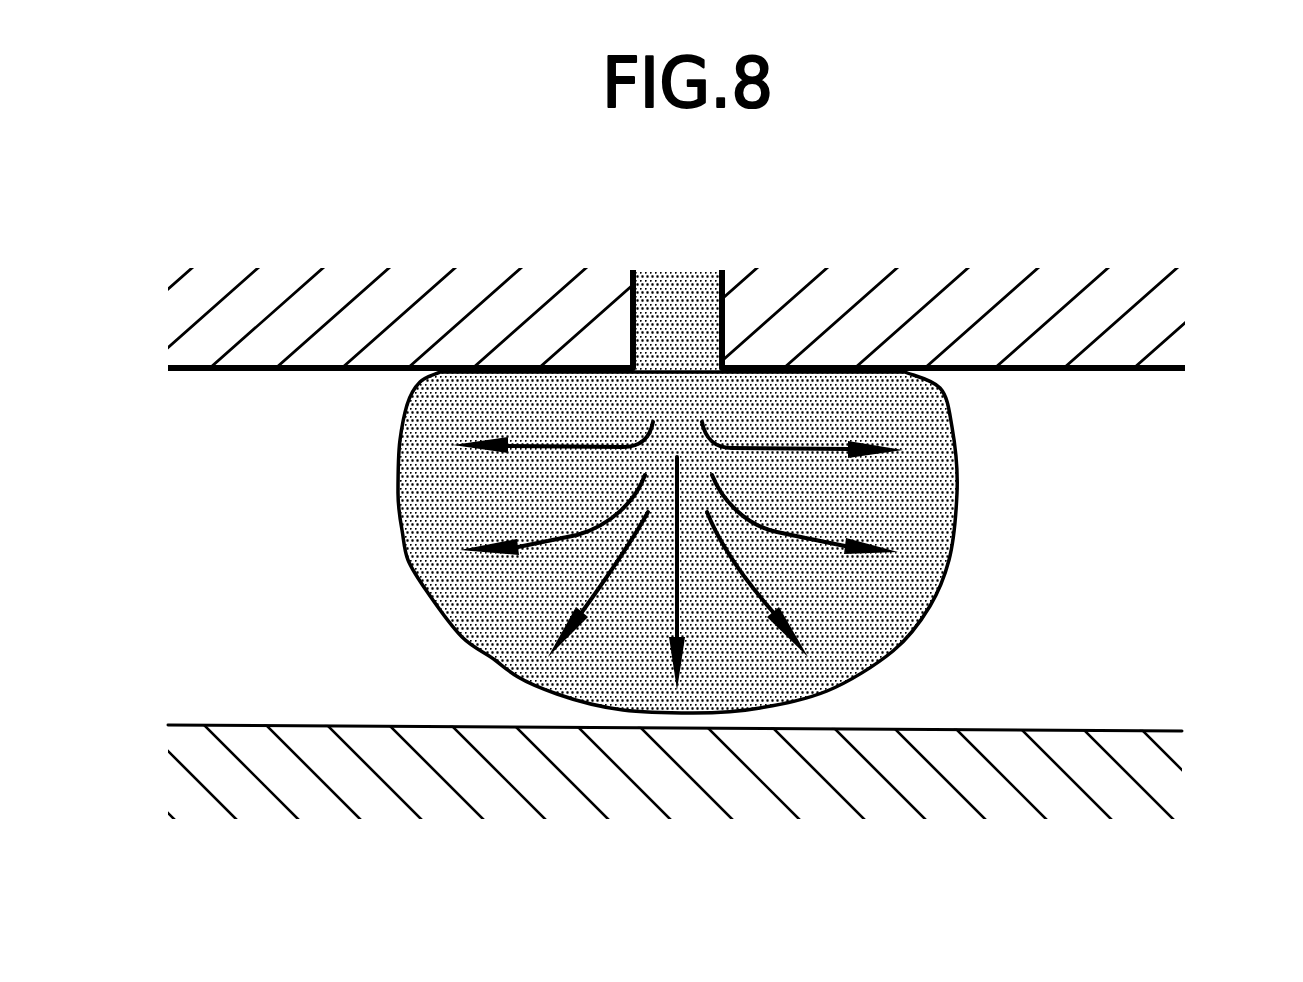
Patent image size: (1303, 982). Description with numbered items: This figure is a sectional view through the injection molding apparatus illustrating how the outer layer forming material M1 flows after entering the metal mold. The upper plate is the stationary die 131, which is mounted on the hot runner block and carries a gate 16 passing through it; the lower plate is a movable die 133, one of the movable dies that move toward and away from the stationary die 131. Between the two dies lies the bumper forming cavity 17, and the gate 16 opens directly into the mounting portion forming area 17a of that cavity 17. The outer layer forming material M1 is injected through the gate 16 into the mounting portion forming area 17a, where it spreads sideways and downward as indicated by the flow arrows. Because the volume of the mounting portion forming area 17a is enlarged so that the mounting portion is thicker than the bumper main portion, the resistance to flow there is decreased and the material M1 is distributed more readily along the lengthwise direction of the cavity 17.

The stationary die 131 is at (1157, 312).
The movable die 133 is at (1148, 778).
The gate 16 is at (642, 292).
The bumper forming cavity 17 is at (1105, 582).
The mounting portion forming area 17a is at (1098, 371).
The outer layer forming material M1 is at (602, 687).